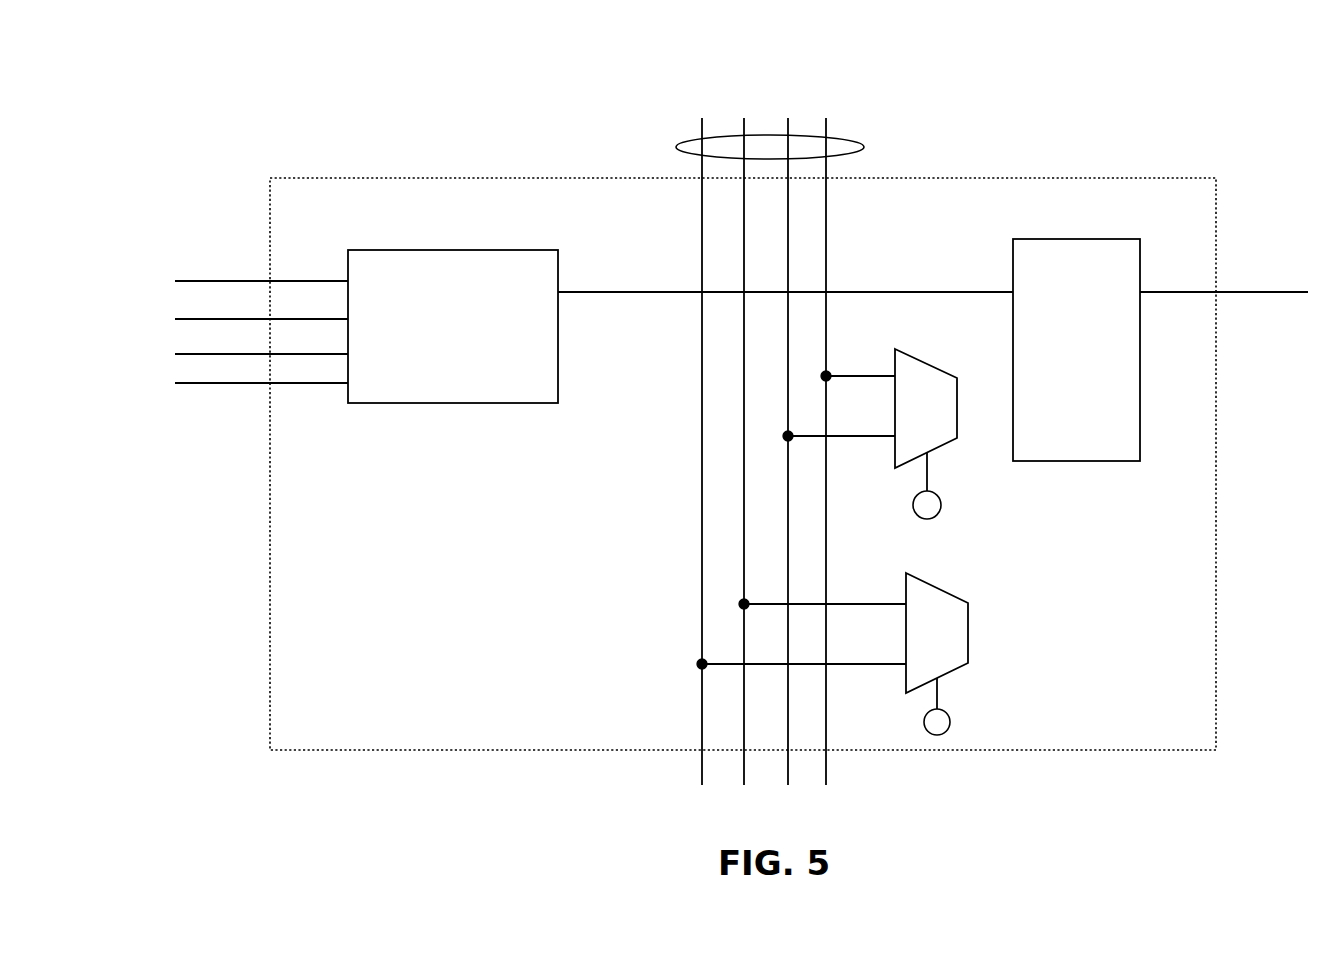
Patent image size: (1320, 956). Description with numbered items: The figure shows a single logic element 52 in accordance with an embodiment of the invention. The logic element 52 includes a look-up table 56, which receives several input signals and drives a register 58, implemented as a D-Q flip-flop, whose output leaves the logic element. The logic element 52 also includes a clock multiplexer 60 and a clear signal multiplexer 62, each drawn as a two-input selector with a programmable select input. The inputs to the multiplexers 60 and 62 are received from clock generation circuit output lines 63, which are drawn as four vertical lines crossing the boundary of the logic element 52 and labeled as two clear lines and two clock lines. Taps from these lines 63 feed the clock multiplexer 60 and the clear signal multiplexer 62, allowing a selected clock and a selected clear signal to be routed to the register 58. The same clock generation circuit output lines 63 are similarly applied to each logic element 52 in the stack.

The logic element 52 is at (1038, 179).
The look-up table 56 is at (483, 403).
The register 58 is at (1093, 239).
The clock multiplexer 60 is at (912, 356).
The clear signal multiplexer 62 is at (922, 580).
The clock generation circuit output lines 63 is at (851, 141).